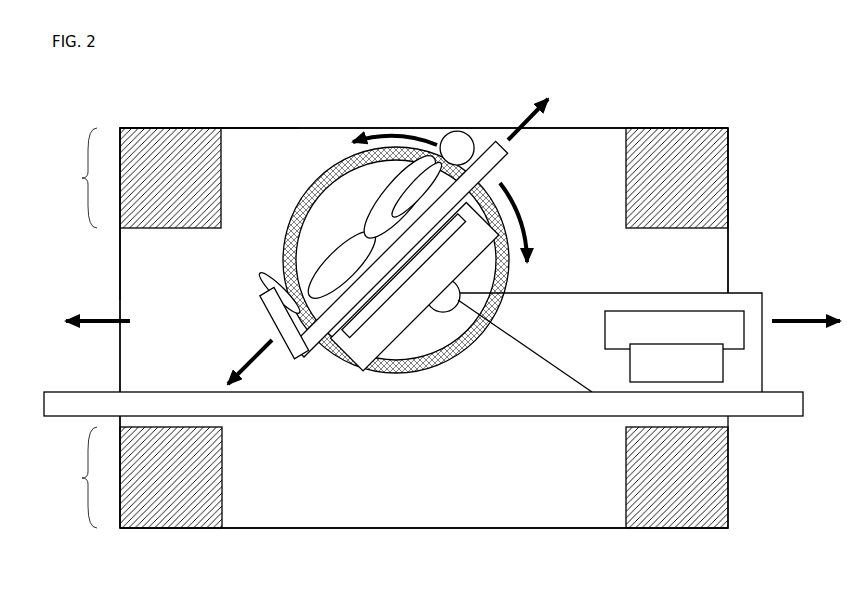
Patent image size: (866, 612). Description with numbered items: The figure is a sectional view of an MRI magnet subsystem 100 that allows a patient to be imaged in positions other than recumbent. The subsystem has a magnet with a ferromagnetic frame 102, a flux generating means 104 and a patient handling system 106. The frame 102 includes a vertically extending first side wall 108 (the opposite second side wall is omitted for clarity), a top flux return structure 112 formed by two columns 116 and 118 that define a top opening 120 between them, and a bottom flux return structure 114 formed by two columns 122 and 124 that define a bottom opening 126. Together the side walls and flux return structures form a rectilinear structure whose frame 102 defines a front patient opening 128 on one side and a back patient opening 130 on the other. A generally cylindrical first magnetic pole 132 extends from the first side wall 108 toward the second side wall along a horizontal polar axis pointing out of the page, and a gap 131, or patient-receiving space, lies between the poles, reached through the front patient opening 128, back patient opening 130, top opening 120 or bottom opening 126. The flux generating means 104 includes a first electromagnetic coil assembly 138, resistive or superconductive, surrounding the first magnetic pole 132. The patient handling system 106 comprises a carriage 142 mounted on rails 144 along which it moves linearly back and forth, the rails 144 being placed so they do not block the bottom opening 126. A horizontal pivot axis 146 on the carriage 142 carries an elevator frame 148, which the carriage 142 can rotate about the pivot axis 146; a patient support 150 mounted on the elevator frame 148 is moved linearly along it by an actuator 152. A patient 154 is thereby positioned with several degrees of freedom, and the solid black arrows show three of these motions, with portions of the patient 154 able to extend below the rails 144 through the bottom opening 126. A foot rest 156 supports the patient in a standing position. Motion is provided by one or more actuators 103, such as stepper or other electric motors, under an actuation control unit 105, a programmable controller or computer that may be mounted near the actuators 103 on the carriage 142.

The MRI magnet subsystem 100 is at (748, 60).
The ferromagnetic frame 102 is at (72, 122).
The actuators 103 is at (745, 315).
The flux generating means 104 is at (367, 181).
The actuation control unit 105 is at (724, 366).
The patient handling system 106 is at (257, 331).
The first side wall 108 is at (262, 127).
The top flux return structure 112 is at (76, 178).
The bottom flux return structure 114 is at (76, 477).
The column 116 is at (158, 160).
The column 118 is at (677, 158).
The top opening 120 is at (448, 91).
The column 122 is at (158, 487).
The column 124 is at (677, 484).
The bottom opening 126 is at (261, 554).
The front patient opening 128 is at (90, 291).
The back patient opening 130 is at (754, 283).
The gap 131 is at (360, 204).
The first magnetic pole 132 is at (343, 212).
The first electromagnetic coil assembly 138 is at (325, 168).
The carriage 142 is at (763, 380).
The rails 144 is at (770, 418).
The pivot axis 146 is at (445, 313).
The elevator frame 148 is at (412, 320).
The patient support 150 is at (318, 343).
The actuator 152 is at (362, 327).
The patient 154 is at (461, 147).
The foot rest 156 is at (290, 335).